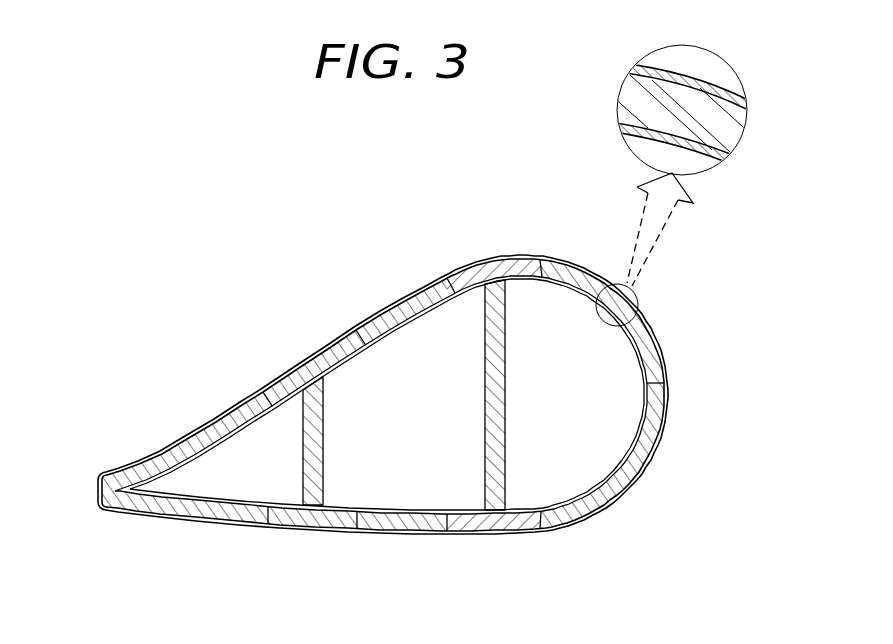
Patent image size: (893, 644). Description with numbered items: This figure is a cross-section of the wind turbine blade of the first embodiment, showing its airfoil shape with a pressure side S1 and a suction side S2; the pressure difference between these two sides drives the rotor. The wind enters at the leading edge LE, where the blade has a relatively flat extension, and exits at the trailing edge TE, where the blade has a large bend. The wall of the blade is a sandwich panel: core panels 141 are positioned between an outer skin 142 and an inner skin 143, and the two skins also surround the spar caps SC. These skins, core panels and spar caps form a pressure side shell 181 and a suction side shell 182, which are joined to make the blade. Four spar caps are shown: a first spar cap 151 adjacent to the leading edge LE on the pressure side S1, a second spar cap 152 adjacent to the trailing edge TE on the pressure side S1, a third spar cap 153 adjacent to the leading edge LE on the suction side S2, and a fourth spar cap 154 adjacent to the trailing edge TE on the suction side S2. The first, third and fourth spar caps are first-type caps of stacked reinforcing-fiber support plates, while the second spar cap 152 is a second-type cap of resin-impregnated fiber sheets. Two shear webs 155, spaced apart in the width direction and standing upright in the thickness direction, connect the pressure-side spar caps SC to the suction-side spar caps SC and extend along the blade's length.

The core panels 141 is at (405, 531).
The outer skin 142 is at (722, 78).
The inner skin 143 is at (695, 157).
The first spar cap 151 is at (505, 256).
The second spar cap 152 is at (313, 364).
The third spar cap 153 is at (493, 531).
The fourth spar cap 154 is at (315, 524).
The shear webs 155 is at (485, 377).
The pressure side shell 181 is at (280, 368).
The suction side shell 182 is at (584, 524).
The spar caps SC is at (150, 143).
The pressure side S1 is at (217, 418).
The suction side S2 is at (230, 527).
The trailing edge TE is at (97, 480).
The leading edge LE is at (669, 379).